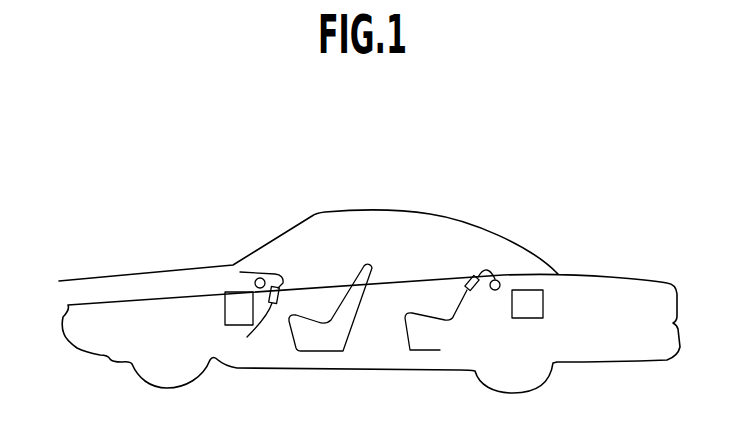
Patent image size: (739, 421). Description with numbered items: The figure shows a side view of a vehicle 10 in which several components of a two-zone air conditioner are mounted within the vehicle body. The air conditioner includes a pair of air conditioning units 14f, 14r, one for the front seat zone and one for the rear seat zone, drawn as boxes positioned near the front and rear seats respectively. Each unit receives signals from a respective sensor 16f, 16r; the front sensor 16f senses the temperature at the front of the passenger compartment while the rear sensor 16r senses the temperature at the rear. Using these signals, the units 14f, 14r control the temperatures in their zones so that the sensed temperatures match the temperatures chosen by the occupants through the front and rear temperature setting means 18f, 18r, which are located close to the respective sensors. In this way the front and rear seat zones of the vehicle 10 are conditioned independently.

The vehicle 10 is at (386, 198).
The front air conditioning unit 14f is at (237, 291).
The rear air conditioning unit 14r is at (533, 289).
The front sensor 16f is at (258, 278).
The rear sensor 16r is at (497, 279).
The front temperature setting means 18f is at (281, 288).
The rear temperature setting means 18r is at (467, 277).